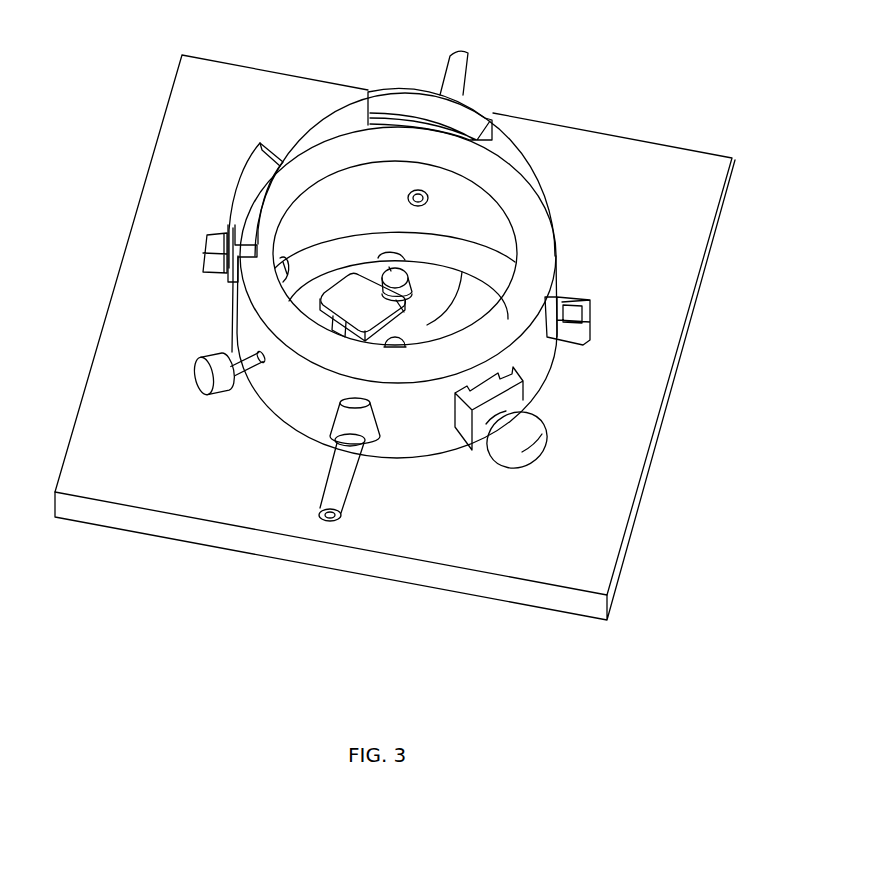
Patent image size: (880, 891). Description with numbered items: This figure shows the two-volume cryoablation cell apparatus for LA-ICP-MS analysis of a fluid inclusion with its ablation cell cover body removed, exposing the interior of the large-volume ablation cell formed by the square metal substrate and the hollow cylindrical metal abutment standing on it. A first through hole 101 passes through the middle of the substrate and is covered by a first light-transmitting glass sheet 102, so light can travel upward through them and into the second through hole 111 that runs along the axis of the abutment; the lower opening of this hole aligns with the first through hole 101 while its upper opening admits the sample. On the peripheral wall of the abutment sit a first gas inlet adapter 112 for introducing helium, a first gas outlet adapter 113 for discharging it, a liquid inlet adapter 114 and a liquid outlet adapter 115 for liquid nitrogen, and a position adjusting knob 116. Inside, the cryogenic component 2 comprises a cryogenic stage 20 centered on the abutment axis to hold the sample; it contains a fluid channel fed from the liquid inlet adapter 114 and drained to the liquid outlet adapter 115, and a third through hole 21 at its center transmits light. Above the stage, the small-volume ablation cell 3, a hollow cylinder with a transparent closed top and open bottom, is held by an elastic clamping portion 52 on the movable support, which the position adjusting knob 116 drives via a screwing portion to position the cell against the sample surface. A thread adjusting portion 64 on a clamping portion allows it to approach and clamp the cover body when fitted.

The cryogenic component 2 is at (528, 298).
The small-volume ablation cell 3 is at (397, 268).
The cryogenic stage 20 is at (478, 295).
The third through hole 21 is at (408, 343).
The elastic clamping portion 52 is at (421, 316).
The thread adjusting portion 64 is at (523, 453).
The first through hole 101 is at (358, 262).
The first light-transmitting glass sheet 102 is at (390, 265).
The second through hole 111 is at (378, 172).
The first gas inlet adapter 112 is at (470, 57).
The first gas outlet adapter 113 is at (343, 519).
The liquid inlet adapter 114 is at (205, 240).
The liquid outlet adapter 115 is at (577, 301).
The position adjusting knob 116 is at (197, 371).